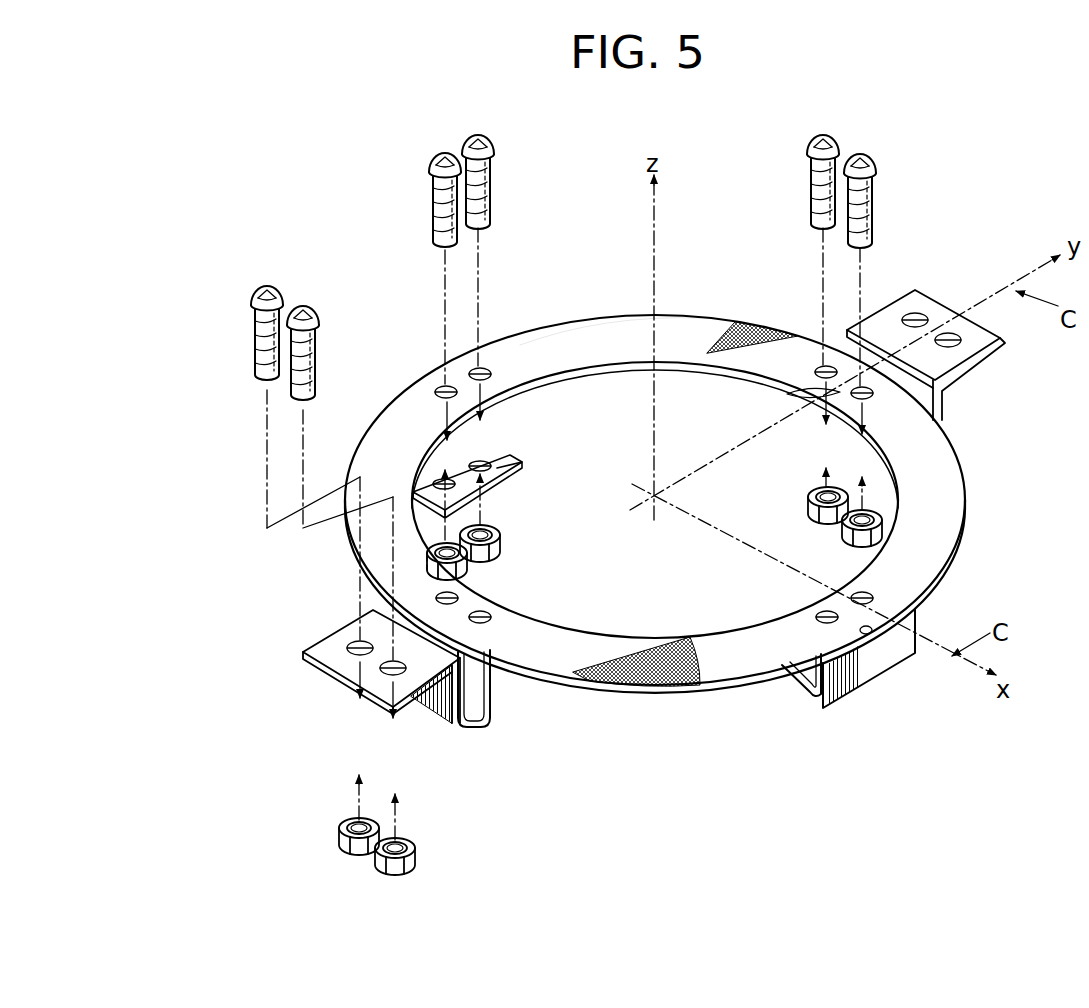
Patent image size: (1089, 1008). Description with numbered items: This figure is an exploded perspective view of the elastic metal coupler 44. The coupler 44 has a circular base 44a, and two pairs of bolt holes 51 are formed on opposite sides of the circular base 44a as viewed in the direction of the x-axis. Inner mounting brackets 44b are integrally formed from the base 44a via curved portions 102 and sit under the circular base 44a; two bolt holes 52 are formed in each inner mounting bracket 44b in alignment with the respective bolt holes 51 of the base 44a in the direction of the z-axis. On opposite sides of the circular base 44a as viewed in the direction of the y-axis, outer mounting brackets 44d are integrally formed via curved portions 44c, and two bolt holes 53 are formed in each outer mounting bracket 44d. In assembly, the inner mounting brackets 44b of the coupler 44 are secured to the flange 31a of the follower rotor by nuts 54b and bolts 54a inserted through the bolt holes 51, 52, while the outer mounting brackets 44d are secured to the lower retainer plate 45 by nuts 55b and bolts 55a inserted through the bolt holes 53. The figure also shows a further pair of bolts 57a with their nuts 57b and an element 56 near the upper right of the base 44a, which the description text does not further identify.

The elastic metal coupler 44 is at (741, 300).
The circular base 44a is at (617, 335).
The inner mounting brackets 44b is at (794, 690).
The curved portions 44c is at (492, 706).
The outer mounting brackets 44d is at (345, 633).
The lower retainer plate 45 is at (535, 602).
The flange 31a is at (535, 444).
The bolt holes 51 is at (870, 592).
The bolt holes 52 is at (497, 468).
The bolt holes 53 is at (345, 656).
The bolts 54a is at (470, 198).
The nuts 54b is at (455, 570).
The bolts 55a is at (300, 368).
The nuts 55b is at (388, 864).
The tab 56 is at (790, 394).
The screws 57a is at (866, 212).
The nuts 57b is at (818, 506).
The curved portions 102 is at (821, 714).